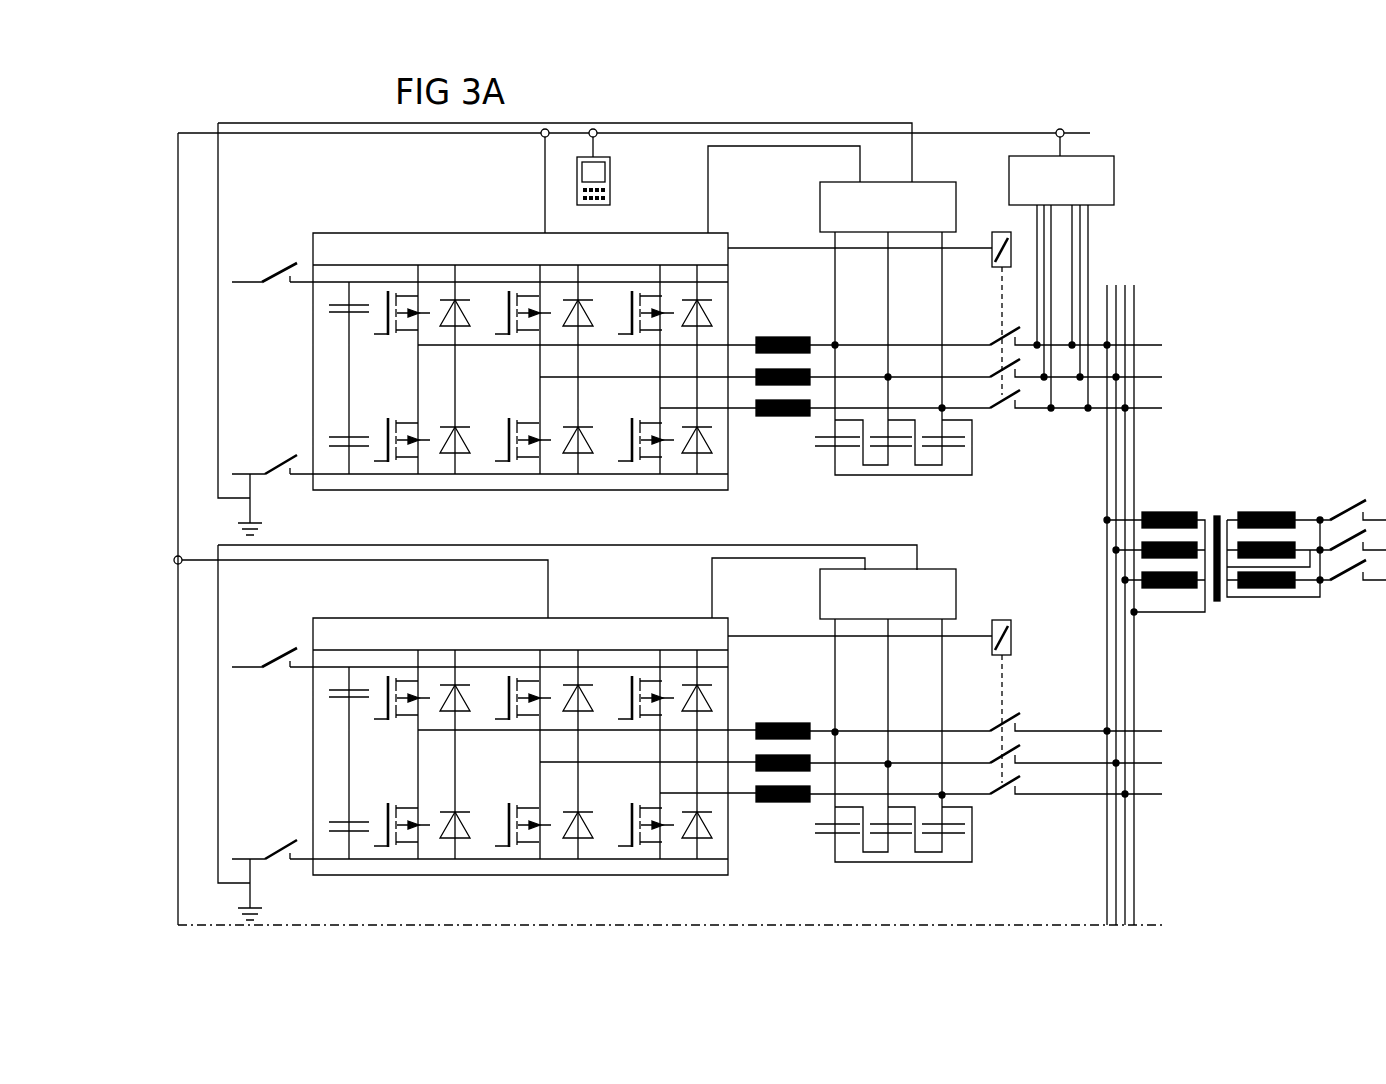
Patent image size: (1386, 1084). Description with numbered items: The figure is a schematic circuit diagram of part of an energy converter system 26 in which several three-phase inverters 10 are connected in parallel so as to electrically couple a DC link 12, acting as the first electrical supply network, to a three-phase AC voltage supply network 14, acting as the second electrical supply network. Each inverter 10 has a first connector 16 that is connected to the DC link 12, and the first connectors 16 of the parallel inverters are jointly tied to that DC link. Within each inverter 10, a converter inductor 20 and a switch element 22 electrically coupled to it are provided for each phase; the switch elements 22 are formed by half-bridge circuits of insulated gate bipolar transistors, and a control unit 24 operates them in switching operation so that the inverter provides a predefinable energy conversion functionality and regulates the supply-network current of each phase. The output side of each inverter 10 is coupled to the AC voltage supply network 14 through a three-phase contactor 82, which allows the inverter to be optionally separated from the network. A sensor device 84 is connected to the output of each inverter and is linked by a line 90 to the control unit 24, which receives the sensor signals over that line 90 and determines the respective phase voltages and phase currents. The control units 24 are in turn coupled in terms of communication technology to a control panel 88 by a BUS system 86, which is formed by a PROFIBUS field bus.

The inverter 10 is at (166, 321).
The DC link 12 is at (200, 373).
The three-phase AC voltage supply network 14 is at (1226, 638).
The first connector 16 is at (992, 420).
The converter inductor 20 is at (754, 345).
The switch element 22 is at (386, 300).
The control unit 24 is at (683, 242).
The energy converter system 26 is at (1108, 142).
The three-phase contactor 82 is at (1000, 232).
The sensor device 84 is at (820, 210).
The BUS system 86 is at (178, 462).
The control panel 88 is at (600, 150).
The line 90 is at (771, 146).